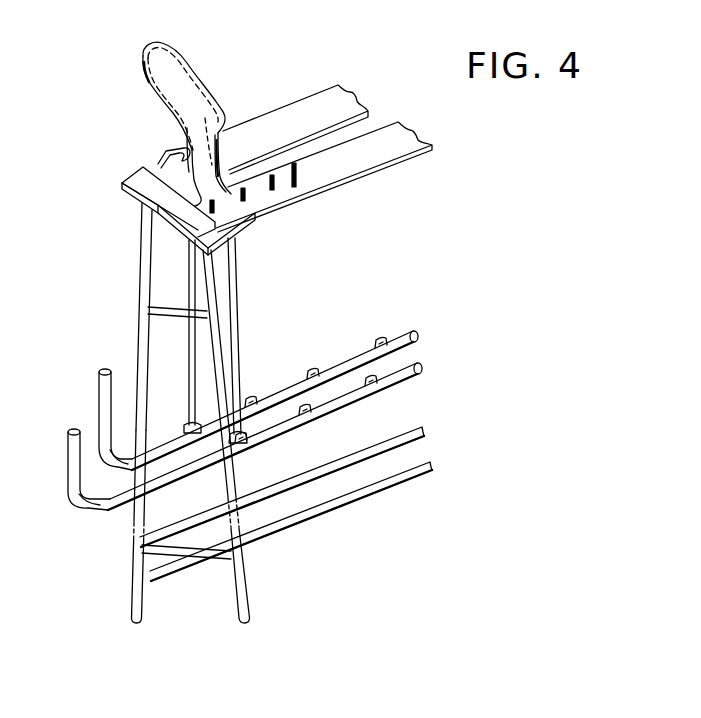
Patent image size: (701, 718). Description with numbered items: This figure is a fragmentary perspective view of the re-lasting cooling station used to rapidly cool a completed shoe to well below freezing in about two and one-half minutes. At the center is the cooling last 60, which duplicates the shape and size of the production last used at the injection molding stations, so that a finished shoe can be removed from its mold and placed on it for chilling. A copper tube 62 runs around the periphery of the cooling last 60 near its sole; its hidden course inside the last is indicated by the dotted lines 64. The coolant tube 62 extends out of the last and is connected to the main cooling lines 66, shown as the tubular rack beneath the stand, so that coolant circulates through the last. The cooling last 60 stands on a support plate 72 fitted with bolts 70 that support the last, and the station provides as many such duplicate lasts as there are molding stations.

The cooling last 60 is at (205, 79).
The copper tube 62 is at (192, 129).
The dotted lines 64 is at (181, 60).
The main cooling lines 66 is at (285, 421).
The bolts 70 is at (215, 212).
The support plate 72 is at (386, 157).